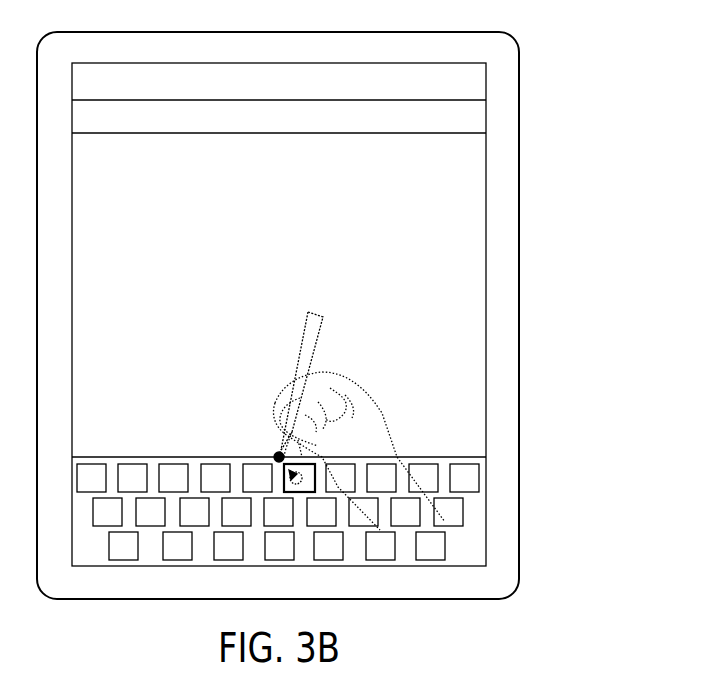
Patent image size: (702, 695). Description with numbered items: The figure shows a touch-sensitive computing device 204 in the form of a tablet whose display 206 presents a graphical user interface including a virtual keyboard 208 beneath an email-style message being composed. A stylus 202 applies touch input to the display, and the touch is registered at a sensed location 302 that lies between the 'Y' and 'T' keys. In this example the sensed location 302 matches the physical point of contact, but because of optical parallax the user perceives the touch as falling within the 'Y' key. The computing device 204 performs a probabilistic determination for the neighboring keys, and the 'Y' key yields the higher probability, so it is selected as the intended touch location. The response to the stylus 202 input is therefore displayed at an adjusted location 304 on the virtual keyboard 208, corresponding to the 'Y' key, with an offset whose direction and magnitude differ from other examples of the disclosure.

The stylus 202 is at (323, 317).
The touch-sensitive computing device 204 is at (519, 50).
The display 206 is at (460, 176).
The virtual keyboard 208 is at (176, 440).
The sensed location 302 is at (276, 455).
The adjusted location 304 is at (300, 492).